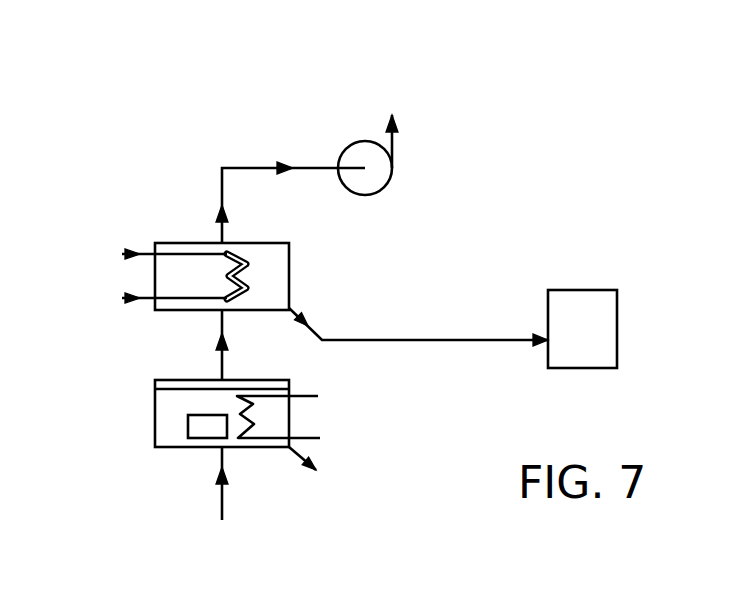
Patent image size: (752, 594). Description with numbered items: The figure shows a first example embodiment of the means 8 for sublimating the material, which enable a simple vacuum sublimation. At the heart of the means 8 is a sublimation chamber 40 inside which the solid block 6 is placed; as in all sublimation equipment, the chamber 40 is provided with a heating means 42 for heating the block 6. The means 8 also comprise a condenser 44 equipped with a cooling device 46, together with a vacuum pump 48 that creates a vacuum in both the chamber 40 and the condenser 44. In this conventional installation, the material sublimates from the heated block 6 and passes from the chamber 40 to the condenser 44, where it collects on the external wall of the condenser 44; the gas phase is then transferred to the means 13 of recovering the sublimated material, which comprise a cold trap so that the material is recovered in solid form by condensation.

The means for sublimating the material 8 is at (95, 98).
The condenser 44 is at (187, 232).
The cooling device 46 is at (150, 250).
The vacuum pump 48 is at (383, 171).
The means of recovering the sublimated material 13 is at (600, 329).
The sublimation chamber 40 is at (170, 412).
The heating means 42 is at (313, 436).
The solid block 6 is at (204, 432).